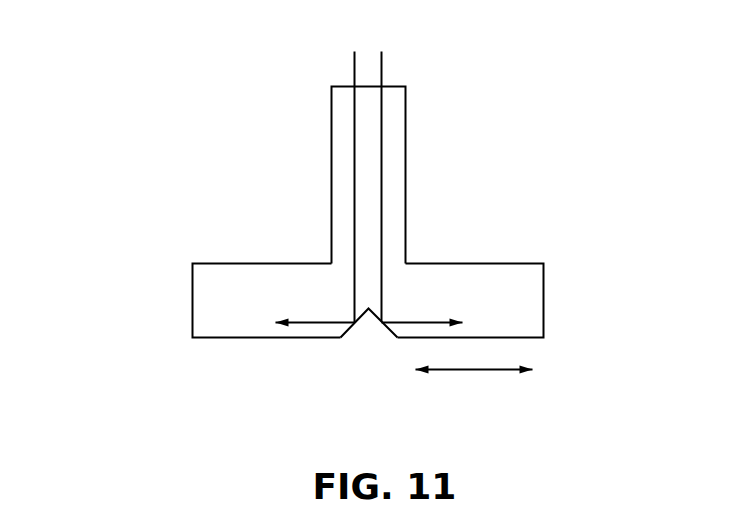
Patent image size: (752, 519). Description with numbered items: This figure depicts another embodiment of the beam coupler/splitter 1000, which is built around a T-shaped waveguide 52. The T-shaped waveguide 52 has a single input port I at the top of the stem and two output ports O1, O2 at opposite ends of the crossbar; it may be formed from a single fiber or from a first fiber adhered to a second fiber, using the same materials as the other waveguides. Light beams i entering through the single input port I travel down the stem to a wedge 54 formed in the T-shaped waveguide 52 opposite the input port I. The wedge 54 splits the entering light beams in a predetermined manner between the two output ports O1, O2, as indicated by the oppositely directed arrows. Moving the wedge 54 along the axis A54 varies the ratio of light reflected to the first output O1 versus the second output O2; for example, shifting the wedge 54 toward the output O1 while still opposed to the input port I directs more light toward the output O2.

The beam coupler/splitter 1000 is at (396, 229).
The single input port I is at (397, 83).
The inlet flow i is at (369, 175).
The T-shaped waveguide 52 is at (485, 286).
The wedge 54 is at (348, 327).
The first output port O1 is at (175, 298).
The second output port O2 is at (558, 300).
The axis A54 is at (473, 369).